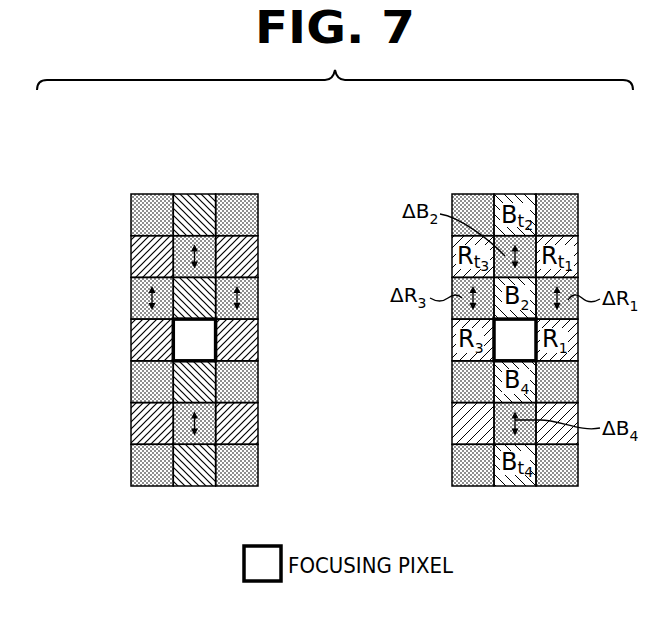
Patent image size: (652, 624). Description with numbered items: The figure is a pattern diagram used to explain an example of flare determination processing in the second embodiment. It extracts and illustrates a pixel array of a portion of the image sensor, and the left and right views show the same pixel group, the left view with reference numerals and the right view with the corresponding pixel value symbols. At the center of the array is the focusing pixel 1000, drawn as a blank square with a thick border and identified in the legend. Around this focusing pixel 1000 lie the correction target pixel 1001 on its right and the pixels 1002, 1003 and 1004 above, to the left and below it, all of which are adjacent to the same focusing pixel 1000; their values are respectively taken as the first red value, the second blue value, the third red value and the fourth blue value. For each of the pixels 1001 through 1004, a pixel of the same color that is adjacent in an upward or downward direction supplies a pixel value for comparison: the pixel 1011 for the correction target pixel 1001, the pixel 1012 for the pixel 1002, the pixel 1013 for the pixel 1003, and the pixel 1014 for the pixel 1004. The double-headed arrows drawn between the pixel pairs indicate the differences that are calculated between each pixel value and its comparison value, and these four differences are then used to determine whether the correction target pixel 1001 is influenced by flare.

The focusing pixel 1000 is at (203, 350).
The correction target pixel 1001 is at (250, 337).
The pixel adjacent to the focusing pixel 1002 is at (202, 278).
The pixel adjacent to the focusing pixel 1003 is at (143, 331).
The pixel adjacent to the focusing pixel 1004 is at (153, 377).
The pixel for comparison 1011 is at (250, 250).
The pixel for comparison 1012 is at (197, 207).
The pixel for comparison 1013 is at (143, 249).
The pixel for comparison 1014 is at (192, 473).